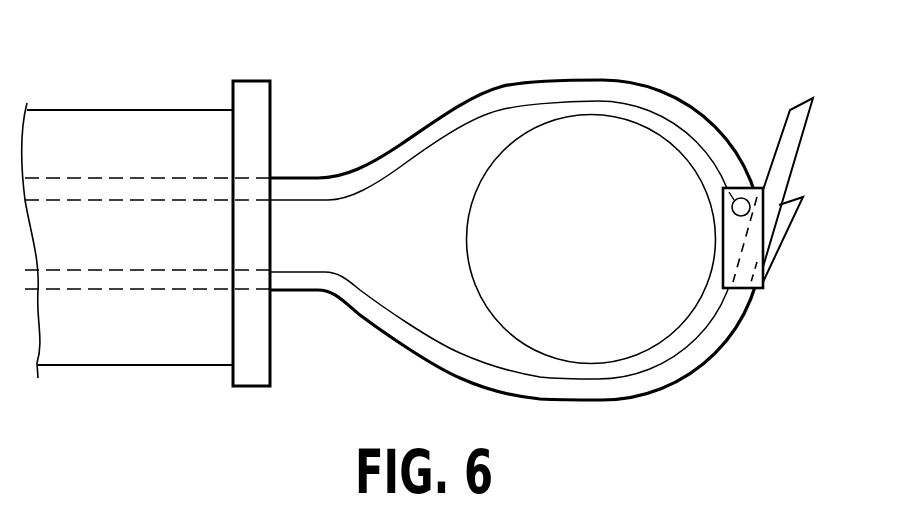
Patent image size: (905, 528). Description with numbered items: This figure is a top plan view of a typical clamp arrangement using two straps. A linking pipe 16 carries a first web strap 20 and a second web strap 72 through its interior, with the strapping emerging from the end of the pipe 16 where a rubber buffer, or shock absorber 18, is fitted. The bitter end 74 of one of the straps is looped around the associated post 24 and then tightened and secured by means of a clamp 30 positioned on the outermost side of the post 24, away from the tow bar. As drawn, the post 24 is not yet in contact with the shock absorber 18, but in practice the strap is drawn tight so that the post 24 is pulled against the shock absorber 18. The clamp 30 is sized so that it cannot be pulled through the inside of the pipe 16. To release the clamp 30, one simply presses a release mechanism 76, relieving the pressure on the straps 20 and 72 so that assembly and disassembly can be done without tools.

The pipe 16 is at (138, 110).
The shock absorber 18 is at (248, 81).
The web strap 20 is at (461, 93).
The post 24 is at (465, 220).
The clamp 30 is at (765, 286).
The second web strap 72 is at (401, 347).
The bitter end 74 is at (782, 123).
The release mechanism 76 is at (805, 195).